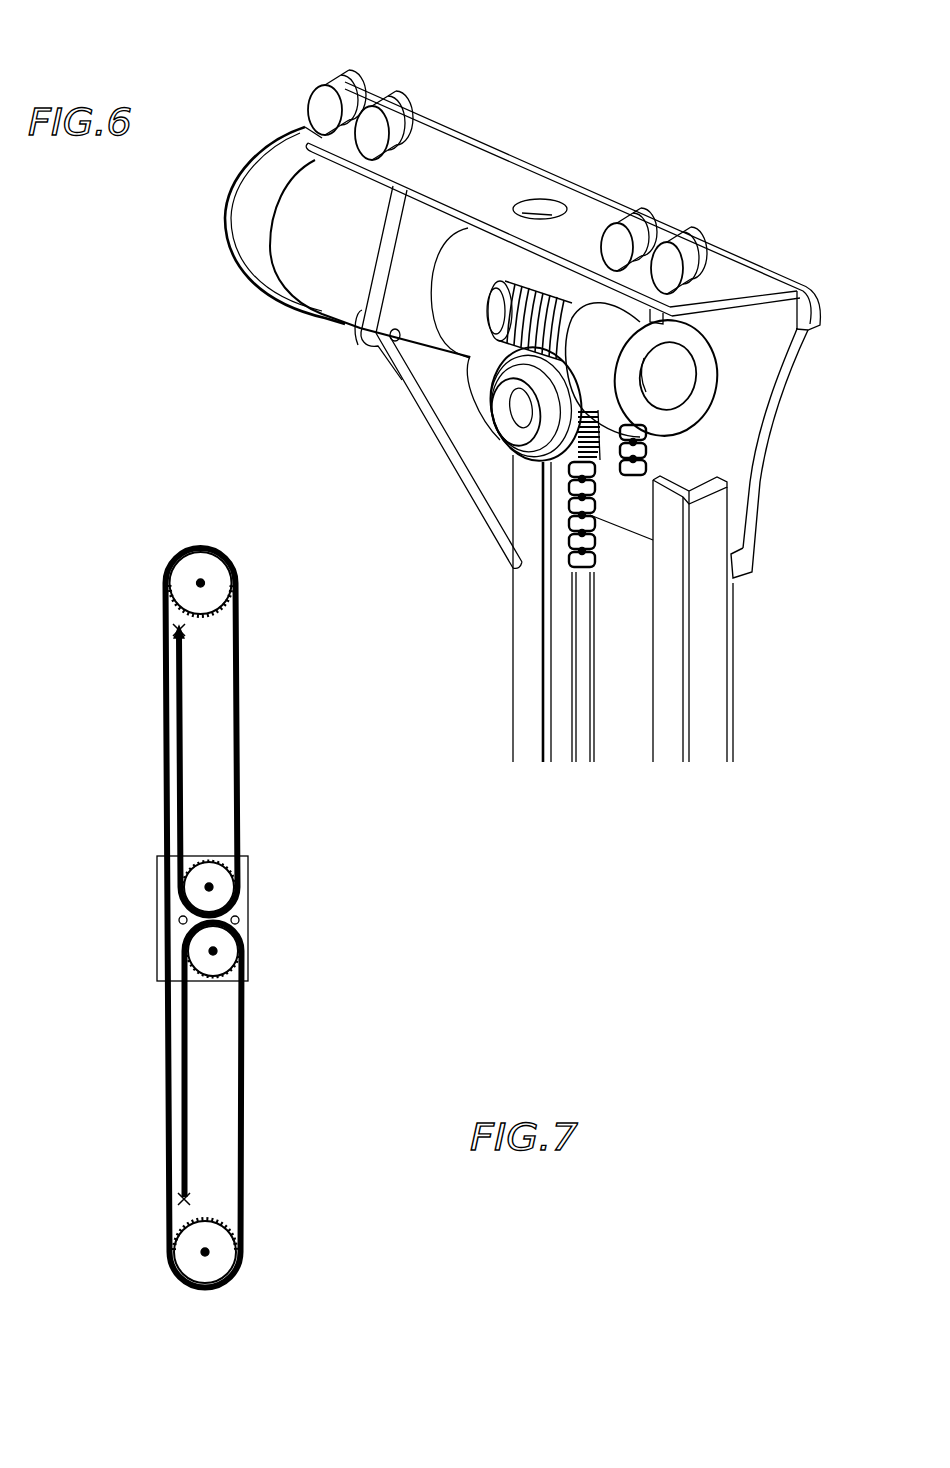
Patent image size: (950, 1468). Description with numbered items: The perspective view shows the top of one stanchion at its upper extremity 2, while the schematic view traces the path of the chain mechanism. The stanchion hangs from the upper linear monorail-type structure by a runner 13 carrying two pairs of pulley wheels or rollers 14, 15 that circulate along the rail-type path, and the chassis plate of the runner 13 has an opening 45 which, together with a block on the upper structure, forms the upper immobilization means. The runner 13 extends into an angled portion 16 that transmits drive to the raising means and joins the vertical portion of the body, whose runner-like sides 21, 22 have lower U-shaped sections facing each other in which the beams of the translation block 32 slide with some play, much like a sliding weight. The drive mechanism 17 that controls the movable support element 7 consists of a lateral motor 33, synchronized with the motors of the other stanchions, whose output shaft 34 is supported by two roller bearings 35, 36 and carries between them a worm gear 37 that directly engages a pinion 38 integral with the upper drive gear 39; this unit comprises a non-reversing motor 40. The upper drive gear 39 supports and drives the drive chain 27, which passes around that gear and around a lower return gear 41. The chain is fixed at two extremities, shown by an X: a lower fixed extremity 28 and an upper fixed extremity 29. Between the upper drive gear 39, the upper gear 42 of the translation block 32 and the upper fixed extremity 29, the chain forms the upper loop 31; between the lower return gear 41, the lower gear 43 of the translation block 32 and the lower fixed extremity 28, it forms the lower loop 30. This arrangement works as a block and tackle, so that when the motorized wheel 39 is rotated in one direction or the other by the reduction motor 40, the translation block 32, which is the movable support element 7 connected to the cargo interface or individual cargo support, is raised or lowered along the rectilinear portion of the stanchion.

In FIG. 6, the upper extremity 2 is at (612, 165).
In FIG. 7, the movable support element 7 is at (266, 899).
In FIG. 6, the runner 13 is at (458, 160).
In FIG. 6, the pair of pulley wheels or rollers 14 is at (685, 217).
In FIG. 6, the pair of pulley wheels or rollers 15 is at (388, 92).
In FIG. 6, the angled portion 16 is at (782, 470).
In FIG. 6, the drive mechanism 17 is at (386, 404).
In FIG. 6, the runner-like side 21 is at (708, 630).
In FIG. 6, the runner-like side 22 is at (530, 668).
In FIG. 6, the drive chain 27 is at (560, 520).
In FIG. 7, the drive chain 27 is at (140, 798).
In FIG. 7, the lower fixed extremity 28 is at (197, 1195).
In FIG. 7, the upper fixed extremity 29 is at (195, 639).
In FIG. 7, the lower loop 30 is at (208, 1063).
In FIG. 7, the upper loop 31 is at (213, 750).
In FIG. 7, the translation block 32 is at (266, 899).
In FIG. 6, the lateral motor 33 is at (257, 258).
In FIG. 6, the output shaft 34 is at (505, 345).
In FIG. 6, the roller bearing 35 is at (448, 330).
In FIG. 6, the roller bearing 36 is at (700, 398).
In FIG. 6, the worm gear 37 is at (572, 302).
In FIG. 6, the pinion 38 is at (467, 448).
In FIG. 7, the upper drive gear 39 is at (190, 572).
In FIG. 6, the non-reversing motor 40 is at (522, 428).
In FIG. 7, the lower return gear 41 is at (212, 1270).
In FIG. 7, the upper gear of translation block 42 is at (223, 890).
In FIG. 7, the lower gear of translation block 43 is at (226, 950).
In FIG. 6, the opening 45 is at (548, 212).